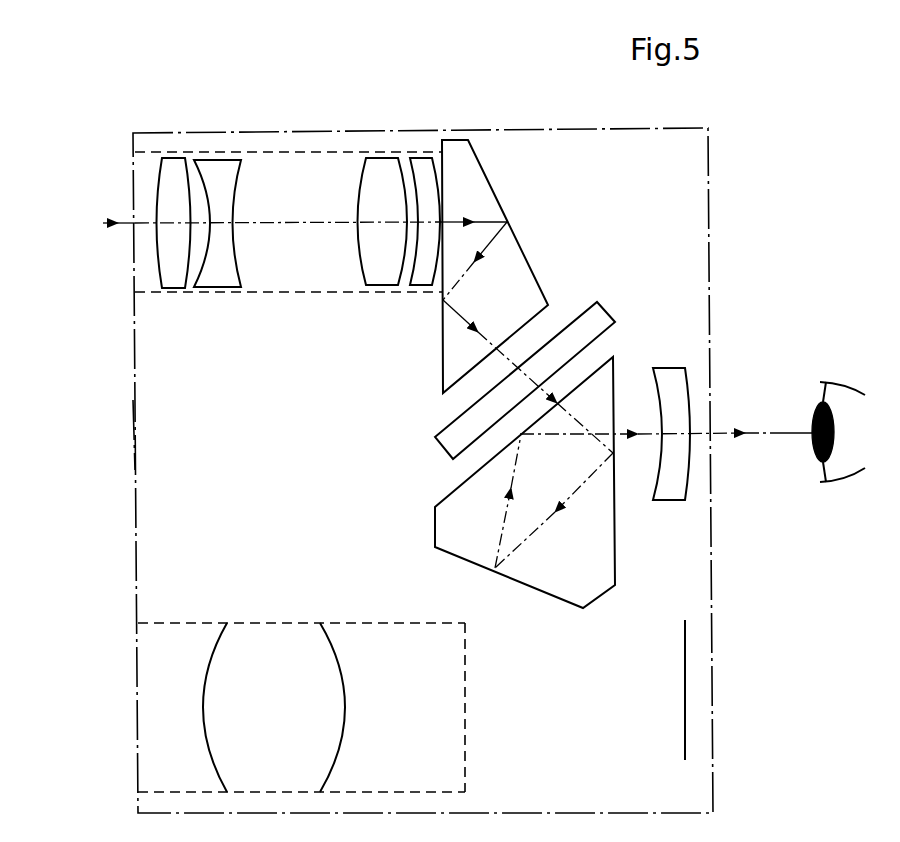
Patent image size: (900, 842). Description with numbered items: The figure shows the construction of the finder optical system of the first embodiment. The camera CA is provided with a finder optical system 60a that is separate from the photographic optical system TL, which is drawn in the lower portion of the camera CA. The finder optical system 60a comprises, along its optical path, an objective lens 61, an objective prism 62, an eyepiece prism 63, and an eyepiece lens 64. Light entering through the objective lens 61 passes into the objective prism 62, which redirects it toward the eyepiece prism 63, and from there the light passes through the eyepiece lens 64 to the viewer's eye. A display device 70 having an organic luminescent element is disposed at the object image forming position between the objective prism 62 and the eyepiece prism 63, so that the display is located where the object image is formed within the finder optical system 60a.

The finder optical system 60a is at (678, 181).
The objective lens 61 is at (306, 152).
The objective prism 62 is at (483, 190).
The eyepiece prism 63 is at (548, 572).
The eyepiece lens 64 is at (673, 490).
The display device 70 is at (600, 315).
The camera CA is at (136, 432).
The photographic optical system TL is at (166, 684).